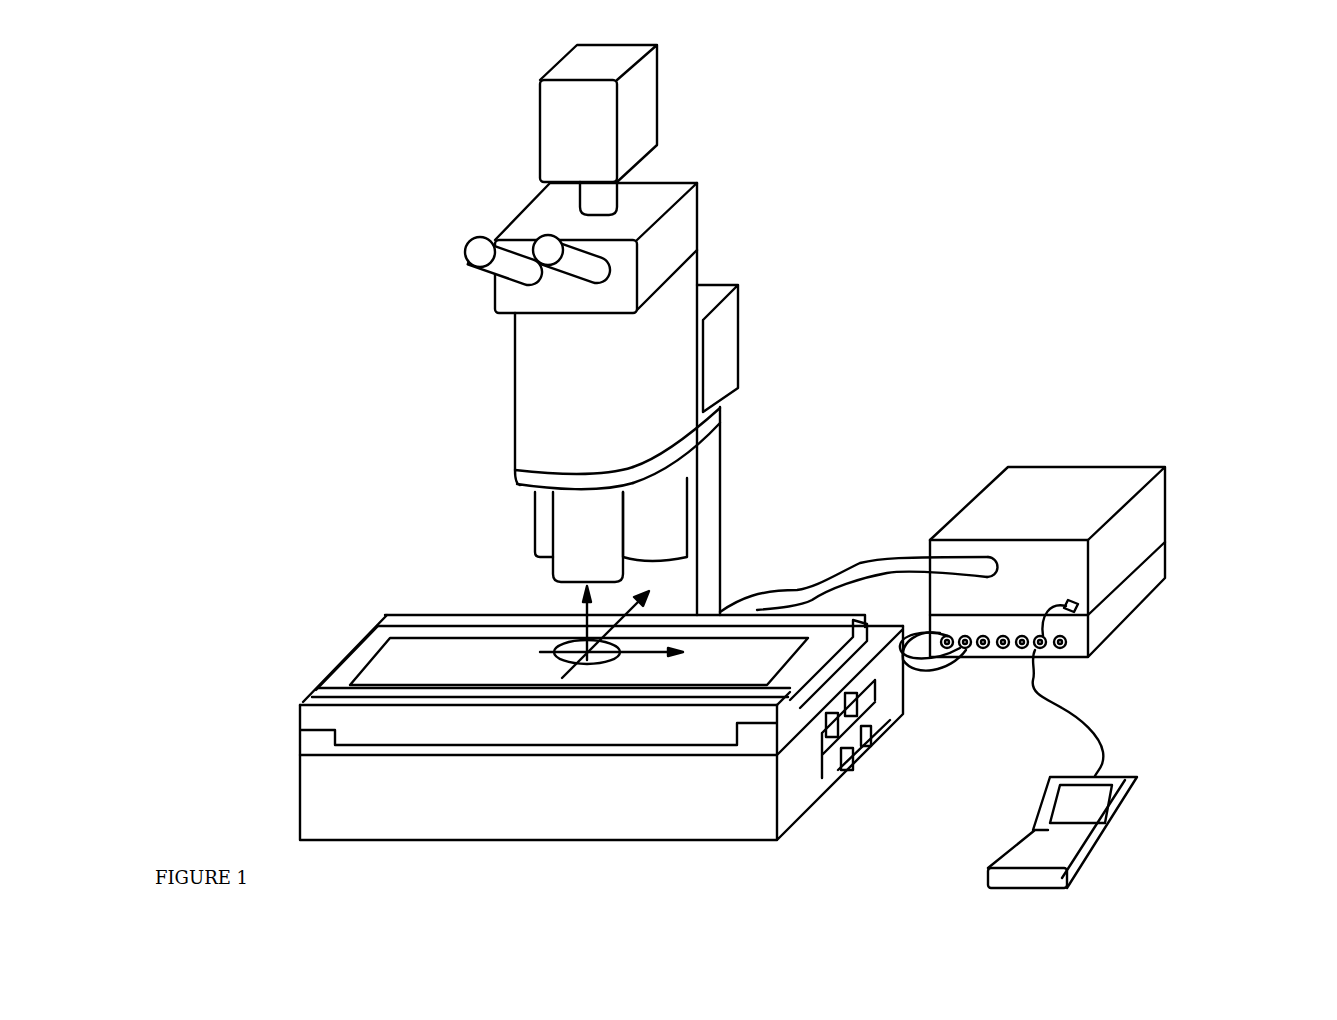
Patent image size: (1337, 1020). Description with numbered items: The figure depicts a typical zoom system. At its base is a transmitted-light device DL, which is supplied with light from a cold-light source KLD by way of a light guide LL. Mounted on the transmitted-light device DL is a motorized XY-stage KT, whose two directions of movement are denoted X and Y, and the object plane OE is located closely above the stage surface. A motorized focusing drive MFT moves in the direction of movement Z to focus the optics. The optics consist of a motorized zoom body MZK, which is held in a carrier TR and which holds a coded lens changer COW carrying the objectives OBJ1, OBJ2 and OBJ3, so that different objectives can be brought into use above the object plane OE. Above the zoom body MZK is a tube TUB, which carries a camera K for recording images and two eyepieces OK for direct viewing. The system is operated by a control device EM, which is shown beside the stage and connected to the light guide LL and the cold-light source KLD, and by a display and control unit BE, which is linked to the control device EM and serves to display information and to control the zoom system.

The camera K is at (558, 122).
The eyepieces OK is at (542, 243).
The tube TUB is at (503, 303).
The motorized focusing drive MFT is at (712, 285).
The motorized zoom body MZK is at (530, 427).
The carrier TR is at (520, 476).
The coded lens changer COW is at (688, 457).
The objective OBJ1 is at (580, 547).
The objective OBJ2 is at (544, 515).
The objective OBJ3 is at (668, 522).
The object plane OE is at (403, 660).
The motorized XY-stage KT is at (642, 733).
The transmitted-light device DL is at (580, 815).
The light guide LL is at (880, 558).
The cold-light source KLD is at (1125, 522).
The control device EM is at (1140, 578).
The display and control unit BE is at (1070, 847).
The direction of movement X is at (625, 653).
The direction of movement Y is at (613, 620).
The direction of movement Z is at (573, 623).